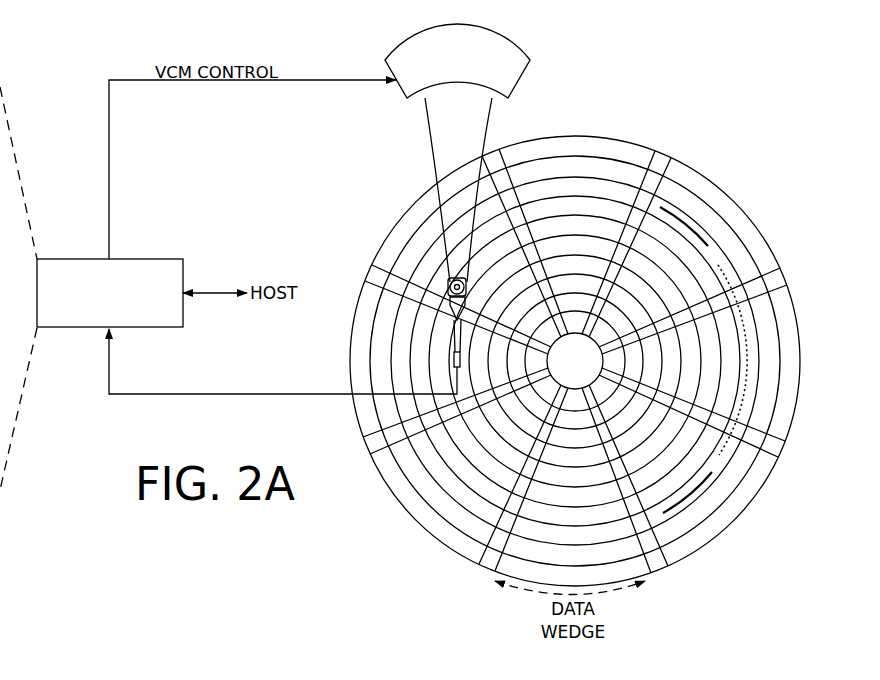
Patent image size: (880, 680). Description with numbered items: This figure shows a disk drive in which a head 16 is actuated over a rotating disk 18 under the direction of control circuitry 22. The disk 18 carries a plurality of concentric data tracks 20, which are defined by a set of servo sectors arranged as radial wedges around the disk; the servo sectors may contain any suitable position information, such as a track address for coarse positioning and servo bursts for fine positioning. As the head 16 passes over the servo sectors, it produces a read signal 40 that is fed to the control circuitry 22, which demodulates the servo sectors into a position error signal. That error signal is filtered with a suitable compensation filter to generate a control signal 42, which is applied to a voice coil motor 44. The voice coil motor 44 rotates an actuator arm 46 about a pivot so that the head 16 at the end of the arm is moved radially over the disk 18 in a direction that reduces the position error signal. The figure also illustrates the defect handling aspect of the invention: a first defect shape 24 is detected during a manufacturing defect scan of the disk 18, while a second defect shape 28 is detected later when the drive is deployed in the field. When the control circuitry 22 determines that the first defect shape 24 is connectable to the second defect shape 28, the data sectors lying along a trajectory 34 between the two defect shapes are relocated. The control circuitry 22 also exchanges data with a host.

The head 16 is at (450, 365).
The disk 18 is at (402, 516).
The data tracks 20 is at (572, 168).
The control circuitry 22 is at (148, 259).
The first defect shape 24 is at (697, 231).
The second defect shape 28 is at (706, 488).
The trajectory 34 is at (753, 367).
The read signal 40 is at (243, 395).
The control signal 42 is at (109, 155).
The voice coil motor 44 is at (401, 90).
The actuator arm 46 is at (440, 168).